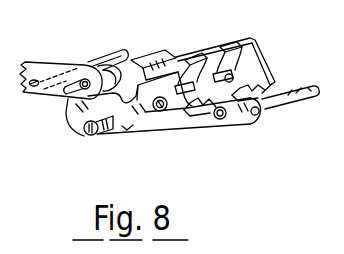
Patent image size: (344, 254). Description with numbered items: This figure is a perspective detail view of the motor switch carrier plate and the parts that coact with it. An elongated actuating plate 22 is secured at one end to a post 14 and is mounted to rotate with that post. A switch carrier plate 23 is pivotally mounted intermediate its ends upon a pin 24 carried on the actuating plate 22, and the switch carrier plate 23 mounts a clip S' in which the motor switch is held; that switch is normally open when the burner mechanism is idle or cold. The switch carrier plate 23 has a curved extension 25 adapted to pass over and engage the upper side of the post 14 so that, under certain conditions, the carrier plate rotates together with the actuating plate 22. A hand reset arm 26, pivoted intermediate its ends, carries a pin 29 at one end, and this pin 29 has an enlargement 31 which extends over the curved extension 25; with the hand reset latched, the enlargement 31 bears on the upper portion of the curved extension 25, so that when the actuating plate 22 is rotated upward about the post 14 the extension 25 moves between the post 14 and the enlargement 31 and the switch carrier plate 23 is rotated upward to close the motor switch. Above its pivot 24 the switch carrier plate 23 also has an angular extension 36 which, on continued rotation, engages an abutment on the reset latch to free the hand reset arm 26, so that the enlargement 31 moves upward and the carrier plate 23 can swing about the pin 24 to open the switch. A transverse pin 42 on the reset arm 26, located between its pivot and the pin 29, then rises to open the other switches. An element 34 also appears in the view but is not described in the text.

The post 14 is at (91, 137).
The actuating plate 22 is at (237, 118).
The switch carrier plate 23 is at (126, 128).
The pin 24 is at (161, 113).
The curved extension 25 is at (72, 120).
The hand reset arm 26 is at (38, 66).
The pin 29 is at (53, 91).
The enlargement 31 is at (101, 89).
The lever 34 is at (302, 101).
The angular extension 36 is at (153, 52).
The transverse pin 42 is at (107, 58).
The clip S' is at (225, 52).